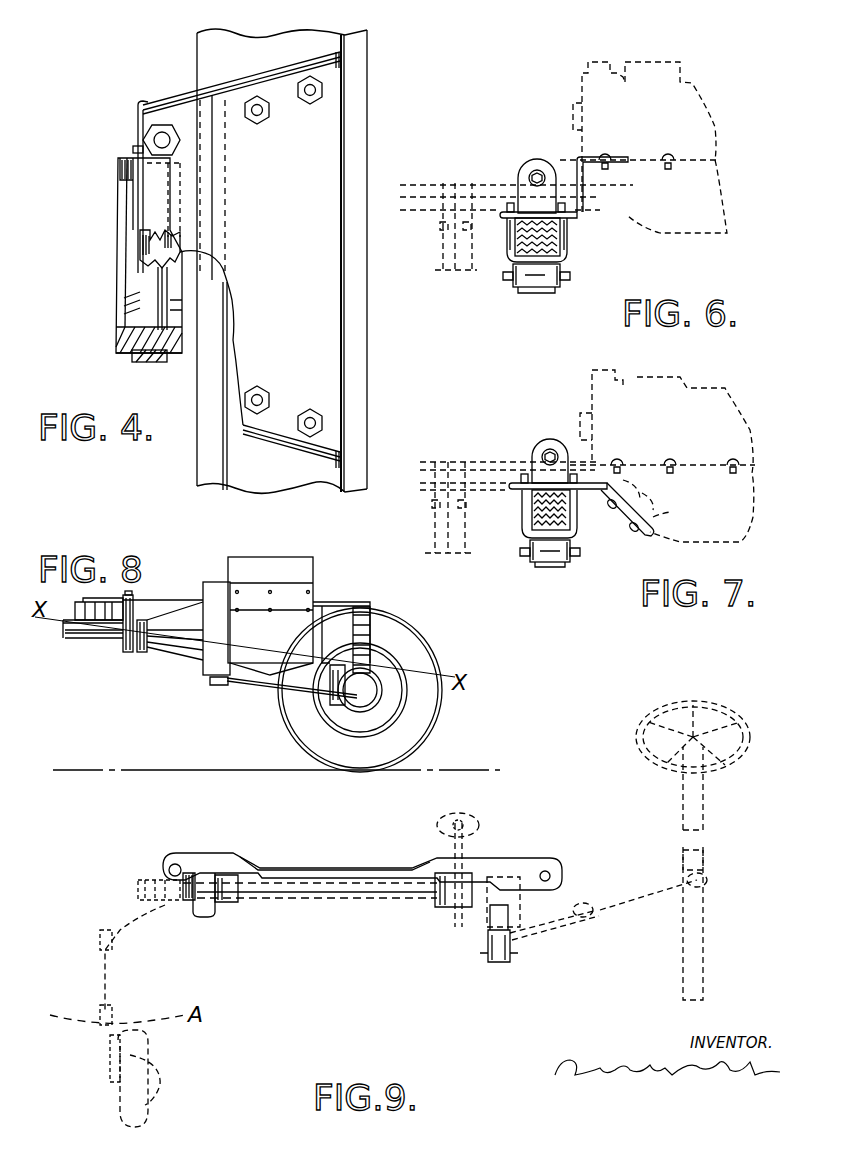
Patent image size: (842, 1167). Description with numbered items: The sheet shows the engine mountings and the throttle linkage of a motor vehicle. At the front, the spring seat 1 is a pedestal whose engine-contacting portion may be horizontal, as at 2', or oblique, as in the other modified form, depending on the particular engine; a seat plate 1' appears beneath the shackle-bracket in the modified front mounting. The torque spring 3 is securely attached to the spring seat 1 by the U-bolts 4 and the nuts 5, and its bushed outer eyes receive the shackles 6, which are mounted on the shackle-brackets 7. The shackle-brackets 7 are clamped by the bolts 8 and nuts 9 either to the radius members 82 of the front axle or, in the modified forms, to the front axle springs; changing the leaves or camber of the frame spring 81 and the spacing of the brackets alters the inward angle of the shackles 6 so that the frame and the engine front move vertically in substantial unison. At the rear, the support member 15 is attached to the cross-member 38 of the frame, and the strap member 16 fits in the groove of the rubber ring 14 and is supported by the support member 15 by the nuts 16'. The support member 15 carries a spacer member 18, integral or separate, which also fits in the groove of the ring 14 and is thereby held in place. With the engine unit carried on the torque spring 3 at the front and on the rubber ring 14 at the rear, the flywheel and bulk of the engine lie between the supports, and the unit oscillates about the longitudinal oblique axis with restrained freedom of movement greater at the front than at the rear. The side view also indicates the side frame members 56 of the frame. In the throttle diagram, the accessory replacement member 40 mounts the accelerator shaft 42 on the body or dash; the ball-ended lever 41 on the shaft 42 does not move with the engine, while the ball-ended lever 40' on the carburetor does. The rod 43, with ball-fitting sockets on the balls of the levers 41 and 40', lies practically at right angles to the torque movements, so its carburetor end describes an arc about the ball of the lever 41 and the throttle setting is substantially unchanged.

In FIG. 8, the spring seat 1 is at (246, 621).
In FIG. 6, the mounting plate 1' is at (513, 255).
In FIG. 6, the horizontal engine-contacting portion 2' is at (617, 164).
In FIG. 6, the spring 3 is at (560, 246).
In FIG. 7, the spring 3 is at (540, 528).
In FIG. 6, the U-bolts 4 is at (567, 256).
In FIG. 7, the U-bolts 4 is at (524, 520).
In FIG. 6, the nuts 5 is at (508, 203).
In FIG. 7, the nuts 5 is at (522, 476).
In FIG. 6, the shackles 6 is at (516, 284).
In FIG. 7, the shackles 6 is at (572, 558).
In FIG. 6, the shackle-brackets 7 is at (519, 172).
In FIG. 7, the shackle-brackets 7 is at (533, 452).
In FIG. 6, the bolts 8 is at (540, 178).
In FIG. 7, the bolts 8 is at (552, 456).
In FIG. 6, the nuts 9 is at (535, 176).
In FIG. 7, the nuts 9 is at (547, 455).
In FIG. 4, the rubber ring 14 is at (116, 343).
In FIG. 8, the rubber ring 14 is at (125, 652).
In FIG. 4, the support member 15 is at (185, 95).
In FIG. 4, the strap member 16 is at (132, 370).
In FIG. 8, the strap member 16 is at (140, 655).
In FIG. 4, the nuts 16' is at (140, 112).
In FIG. 4, the spacer member 18 is at (140, 247).
In FIG. 4, the cross-member 38 is at (198, 455).
In FIG. 8, the cross-member 38 is at (100, 607).
In FIG. 9, the accessory replacement member 40 is at (362, 860).
In FIG. 9, the ball-ended lever 40' is at (106, 1078).
In FIG. 9, the ball-ended lever 41 is at (133, 912).
In FIG. 9, the accelerator shaft 42 is at (315, 899).
In FIG. 9, the rod 43 is at (104, 950).
In FIG. 8, the side frame members 56 is at (66, 610).
In FIG. 8, the frame spring 81 is at (365, 660).
In FIG. 8, the radius members 82 is at (245, 690).